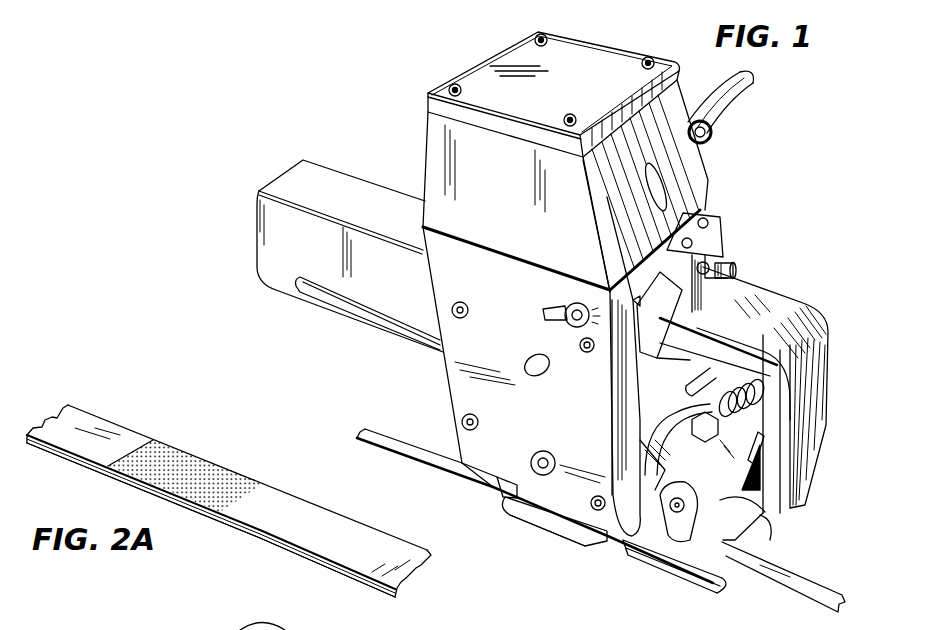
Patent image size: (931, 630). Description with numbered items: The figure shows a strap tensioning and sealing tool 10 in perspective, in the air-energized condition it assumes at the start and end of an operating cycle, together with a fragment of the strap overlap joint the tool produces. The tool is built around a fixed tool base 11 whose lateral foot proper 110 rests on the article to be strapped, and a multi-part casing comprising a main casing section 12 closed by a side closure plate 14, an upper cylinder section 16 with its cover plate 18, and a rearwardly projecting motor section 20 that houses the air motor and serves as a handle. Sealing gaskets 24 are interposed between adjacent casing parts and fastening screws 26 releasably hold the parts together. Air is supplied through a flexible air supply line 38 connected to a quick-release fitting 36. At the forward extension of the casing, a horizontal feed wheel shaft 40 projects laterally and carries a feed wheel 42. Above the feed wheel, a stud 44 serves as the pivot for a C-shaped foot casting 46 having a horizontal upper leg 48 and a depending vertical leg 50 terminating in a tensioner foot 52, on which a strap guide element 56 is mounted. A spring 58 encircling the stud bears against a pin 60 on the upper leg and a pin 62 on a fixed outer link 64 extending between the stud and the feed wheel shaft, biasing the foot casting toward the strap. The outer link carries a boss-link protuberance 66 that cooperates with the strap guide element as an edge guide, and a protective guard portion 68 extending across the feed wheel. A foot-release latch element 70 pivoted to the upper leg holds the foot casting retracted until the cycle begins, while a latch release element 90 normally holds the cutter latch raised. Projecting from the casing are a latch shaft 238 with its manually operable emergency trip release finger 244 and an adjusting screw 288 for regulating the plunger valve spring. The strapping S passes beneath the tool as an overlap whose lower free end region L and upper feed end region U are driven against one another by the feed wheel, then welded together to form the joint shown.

In FIG. 1, the strapping tool 10 is at (394, 138).
In FIG. 1, the fixed tool base 11 is at (583, 541).
In FIG. 1, the main casing section 12 is at (774, 286).
In FIG. 1, the side closure plate 14 is at (462, 400).
In FIG. 1, the upper cylinder section 16 is at (491, 205).
In FIG. 1, the cover plate 18 is at (488, 76).
In FIG. 1, the motor section 20 is at (291, 253).
In FIG. 1, the sealing gaskets 24 is at (517, 135).
In FIG. 1, the fastening screws 26 is at (546, 44).
In FIG. 1, the quick-release fitting 36 is at (709, 142).
In FIG. 1, the flexible air supply line 38 is at (745, 103).
In FIG. 1, the feed wheel shaft 40 is at (662, 556).
In FIG. 1, the feed wheel 42 is at (648, 455).
In FIG. 1, the stud 44 is at (706, 444).
In FIG. 1, the foot casting 46 is at (790, 375).
In FIG. 1, the upper leg 48 is at (757, 338).
In FIG. 1, the vertical leg 50 is at (772, 535).
In FIG. 1, the tensioner foot 52 is at (702, 592).
In FIG. 1, the strap guide element 56 is at (694, 580).
In FIG. 1, the spring 58 is at (770, 400).
In FIG. 1, the pin 60 is at (700, 360).
In FIG. 1, the pin 62 is at (760, 450).
In FIG. 1, the outer link 64 is at (775, 511).
In FIG. 1, the boss-link protuberance 66 is at (680, 516).
In FIG. 1, the protective guard portion 68 is at (770, 494).
In FIG. 1, the foot-release latch element 70 is at (675, 310).
In FIG. 1, the latch release element 90 is at (494, 488).
In FIG. 1, the foot proper 110 is at (530, 505).
In FIG. 1, the latch shaft 238 is at (590, 352).
In FIG. 1, the emergency trip release finger 244 is at (556, 317).
In FIG. 1, the adjusting screw 288 is at (740, 265).
In FIG. 1, the strapping S is at (404, 434).
In FIG. 2A, the strapping S is at (95, 418).
In FIG. 1, the lower free end region L is at (478, 470).
In FIG. 2A, the lower free end region L is at (232, 530).
In FIG. 2A, the upper feed end region U is at (223, 465).